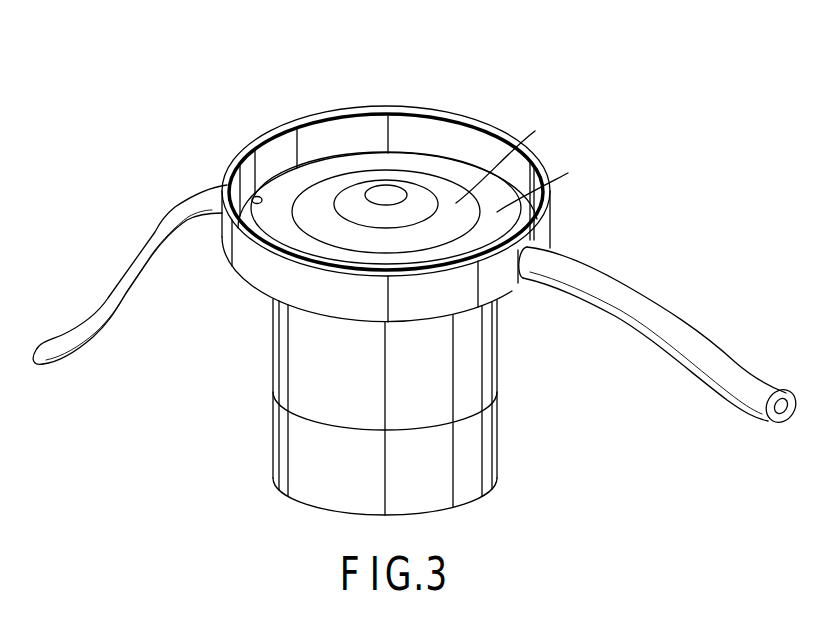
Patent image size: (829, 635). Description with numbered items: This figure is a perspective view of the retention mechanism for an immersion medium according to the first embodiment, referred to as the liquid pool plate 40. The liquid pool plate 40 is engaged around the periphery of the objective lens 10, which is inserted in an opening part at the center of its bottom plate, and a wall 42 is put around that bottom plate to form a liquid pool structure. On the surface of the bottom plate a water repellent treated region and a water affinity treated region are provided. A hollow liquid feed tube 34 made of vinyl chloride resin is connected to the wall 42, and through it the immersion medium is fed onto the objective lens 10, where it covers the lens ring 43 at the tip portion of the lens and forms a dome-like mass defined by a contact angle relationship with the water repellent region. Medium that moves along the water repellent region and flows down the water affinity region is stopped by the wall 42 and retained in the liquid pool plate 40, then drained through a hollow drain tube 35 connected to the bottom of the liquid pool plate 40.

The objective lens 10 is at (275, 362).
The liquid feed tube 34 is at (667, 330).
The drain tube 35 is at (110, 312).
The liquid pool plate 40 is at (405, 91).
The wall 42 is at (306, 140).
The lens ring 43 is at (420, 194).